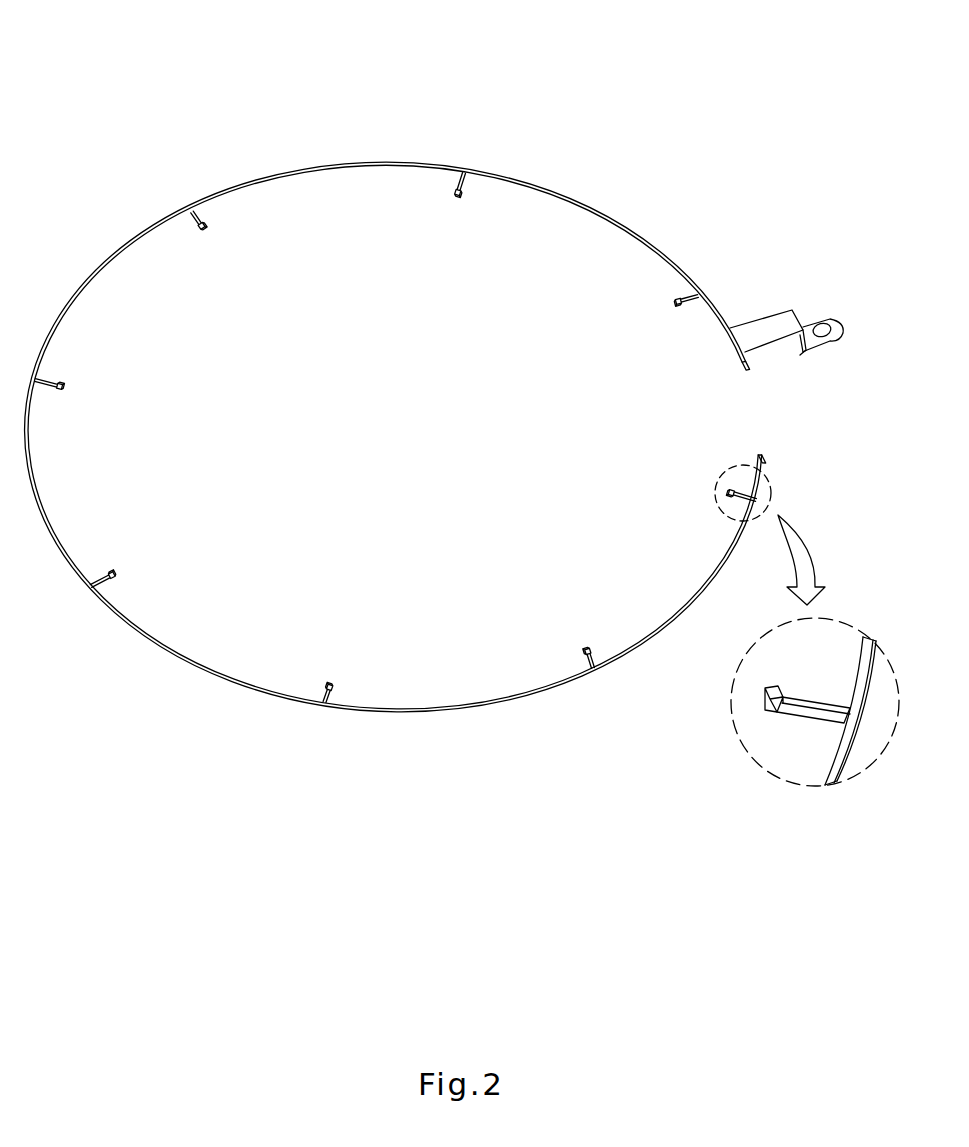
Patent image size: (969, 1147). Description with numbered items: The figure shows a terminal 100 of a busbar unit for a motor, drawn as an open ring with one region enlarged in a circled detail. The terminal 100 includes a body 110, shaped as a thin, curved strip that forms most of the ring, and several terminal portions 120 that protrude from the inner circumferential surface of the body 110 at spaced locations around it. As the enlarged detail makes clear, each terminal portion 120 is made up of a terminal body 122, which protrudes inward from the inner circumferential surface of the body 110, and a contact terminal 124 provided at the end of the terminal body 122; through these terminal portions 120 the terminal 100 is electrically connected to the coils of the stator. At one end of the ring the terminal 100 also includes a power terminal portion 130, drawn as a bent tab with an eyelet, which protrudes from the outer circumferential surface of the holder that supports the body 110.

The terminal 100 is at (146, 26).
The body 110 is at (617, 223).
The terminal portion 120 is at (675, 292).
The terminal body 122 is at (803, 715).
The contact terminal 124 is at (770, 708).
The power terminal portion 130 is at (808, 327).